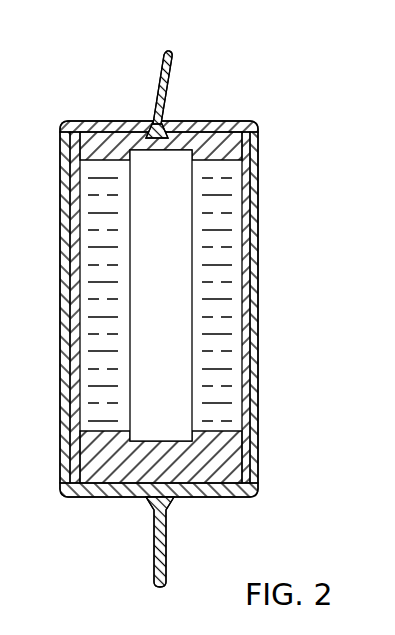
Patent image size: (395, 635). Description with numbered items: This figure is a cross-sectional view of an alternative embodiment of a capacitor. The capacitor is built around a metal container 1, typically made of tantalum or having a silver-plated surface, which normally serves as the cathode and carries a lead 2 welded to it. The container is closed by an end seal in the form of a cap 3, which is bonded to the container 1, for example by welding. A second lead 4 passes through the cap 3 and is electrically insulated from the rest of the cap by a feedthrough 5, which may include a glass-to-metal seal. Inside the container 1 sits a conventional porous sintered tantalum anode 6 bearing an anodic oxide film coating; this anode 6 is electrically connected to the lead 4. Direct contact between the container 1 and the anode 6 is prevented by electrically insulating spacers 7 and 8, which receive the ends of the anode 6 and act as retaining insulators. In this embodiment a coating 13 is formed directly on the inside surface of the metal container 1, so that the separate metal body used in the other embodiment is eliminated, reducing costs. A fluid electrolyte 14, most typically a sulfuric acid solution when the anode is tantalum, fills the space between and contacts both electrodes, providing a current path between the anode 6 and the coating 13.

The metal container 1 is at (255, 352).
The lead 2 is at (168, 558).
The cap 3 is at (237, 120).
The second lead 4 is at (157, 77).
The feedthrough 5 is at (168, 122).
The porous sintered tantalum anode 6 is at (172, 220).
The electrically insulating spacer 7 is at (193, 470).
The electrically insulating spacer 8 is at (100, 127).
The coating 13 is at (245, 312).
The fluid electrolyte 14 is at (232, 398).